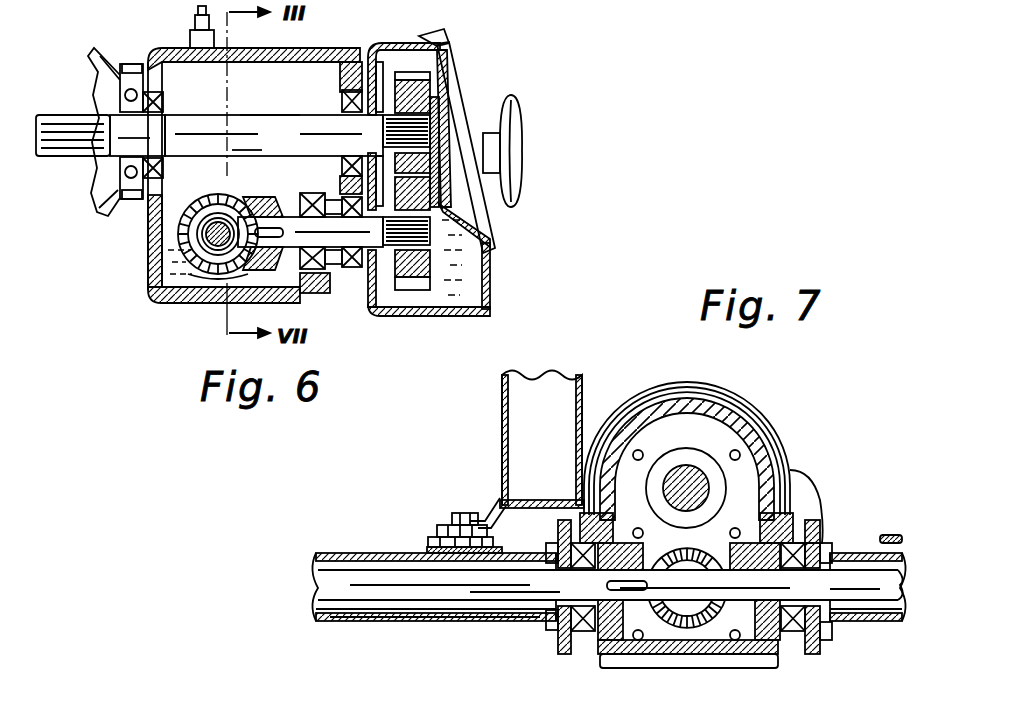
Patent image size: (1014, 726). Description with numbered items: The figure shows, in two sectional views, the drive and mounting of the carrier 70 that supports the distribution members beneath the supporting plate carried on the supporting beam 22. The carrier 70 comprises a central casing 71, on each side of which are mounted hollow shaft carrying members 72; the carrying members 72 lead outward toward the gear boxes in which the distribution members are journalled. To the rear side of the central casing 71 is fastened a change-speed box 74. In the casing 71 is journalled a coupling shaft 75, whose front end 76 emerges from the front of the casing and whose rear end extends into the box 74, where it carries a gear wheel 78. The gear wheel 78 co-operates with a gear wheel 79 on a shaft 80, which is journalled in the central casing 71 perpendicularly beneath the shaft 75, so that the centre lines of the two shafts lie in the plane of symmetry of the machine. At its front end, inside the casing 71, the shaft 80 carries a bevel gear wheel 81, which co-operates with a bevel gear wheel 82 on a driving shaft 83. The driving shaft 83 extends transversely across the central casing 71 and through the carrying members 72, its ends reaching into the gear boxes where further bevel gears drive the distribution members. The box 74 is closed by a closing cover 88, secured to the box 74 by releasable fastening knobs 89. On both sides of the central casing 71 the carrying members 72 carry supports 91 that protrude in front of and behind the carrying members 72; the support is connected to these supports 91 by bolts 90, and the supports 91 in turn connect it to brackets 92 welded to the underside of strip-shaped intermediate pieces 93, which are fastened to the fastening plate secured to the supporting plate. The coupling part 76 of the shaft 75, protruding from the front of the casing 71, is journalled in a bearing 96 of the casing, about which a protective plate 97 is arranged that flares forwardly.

In FIG. 6, the supporting beam 22 is at (357, 133).
In FIG. 7, the carrier 70 is at (384, 628).
In FIG. 6, the central casing 71 is at (150, 286).
In FIG. 7, the central casing 71 is at (745, 415).
In FIG. 7, the hollow shaft carrying member 72 is at (336, 553).
In FIG. 6, the change-speed box 74 is at (444, 322).
In FIG. 7, the change-speed box 74 is at (665, 380).
In FIG. 6, the coupling shaft 75 is at (269, 108).
In FIG. 7, the coupling shaft 75 is at (688, 468).
In FIG. 6, the front end of coupling shaft 76 is at (70, 117).
In FIG. 6, the gear wheel 78 is at (400, 62).
In FIG. 6, the gear wheel 79 is at (413, 292).
In FIG. 6, the shaft 80 is at (238, 198).
In FIG. 6, the bevel gear wheel 81 is at (247, 149).
In FIG. 7, the bevel gear wheel 81 is at (690, 657).
In FIG. 6, the bevel gear wheel 82 is at (217, 275).
In FIG. 7, the bevel gear wheel 82 is at (628, 642).
In FIG. 6, the driving shaft 83 is at (206, 234).
In FIG. 7, the driving shaft 83 is at (345, 584).
In FIG. 6, the closing cover 88 is at (456, 80).
In FIG. 6, the releasable fastening knob 89 is at (522, 145).
In FIG. 7, the releasable fastening knob 89 is at (808, 478).
In FIG. 7, the bolt 90 is at (462, 513).
In FIG. 7, the support 91 is at (428, 545).
In FIG. 7, the bracket 92 is at (481, 500).
In FIG. 7, the strip-shaped intermediate piece 93 is at (556, 388).
In FIG. 6, the bearing 96 is at (143, 48).
In FIG. 6, the protective plate 97 is at (97, 192).